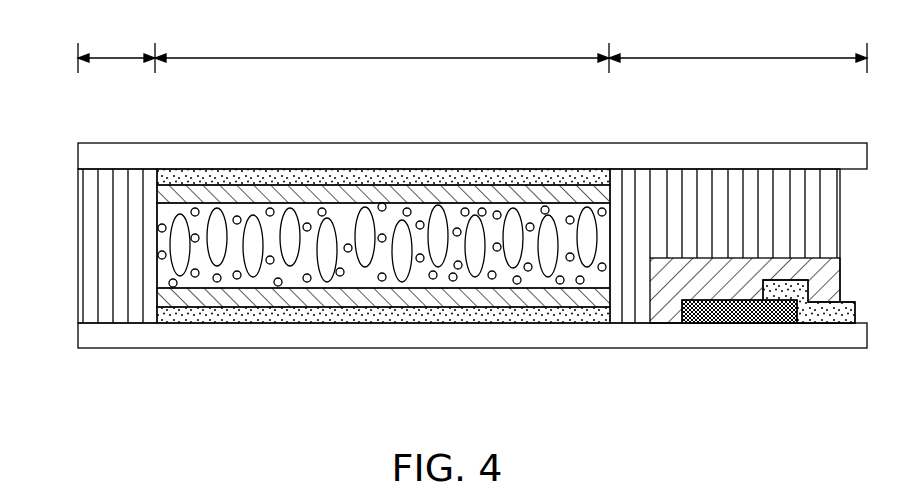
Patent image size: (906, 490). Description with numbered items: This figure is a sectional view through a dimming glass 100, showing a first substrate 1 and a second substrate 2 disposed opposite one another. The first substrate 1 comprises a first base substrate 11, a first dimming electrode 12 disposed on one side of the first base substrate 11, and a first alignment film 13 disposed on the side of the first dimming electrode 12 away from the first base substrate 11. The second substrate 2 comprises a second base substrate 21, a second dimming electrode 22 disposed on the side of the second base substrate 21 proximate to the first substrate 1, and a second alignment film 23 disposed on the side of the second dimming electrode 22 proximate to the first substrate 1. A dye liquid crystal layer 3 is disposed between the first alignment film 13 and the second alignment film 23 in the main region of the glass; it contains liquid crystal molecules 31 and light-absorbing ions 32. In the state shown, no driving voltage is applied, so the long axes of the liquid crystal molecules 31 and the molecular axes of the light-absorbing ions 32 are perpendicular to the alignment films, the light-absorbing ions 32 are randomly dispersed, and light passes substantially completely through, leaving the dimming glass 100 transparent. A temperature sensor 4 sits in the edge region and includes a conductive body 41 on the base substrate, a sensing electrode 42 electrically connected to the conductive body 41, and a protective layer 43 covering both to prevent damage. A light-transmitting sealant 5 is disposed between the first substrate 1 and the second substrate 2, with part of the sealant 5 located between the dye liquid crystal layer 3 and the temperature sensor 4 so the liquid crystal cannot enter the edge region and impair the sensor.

The dimming glass 100 is at (22, 27).
The first substrate 1 is at (168, 390).
The first base substrate 11 is at (178, 338).
The first dimming electrode 12 is at (233, 318).
The first alignment film 13 is at (290, 308).
The second substrate 2 is at (317, 110).
The second base substrate 21 is at (328, 157).
The second dimming electrode 22 is at (381, 178).
The second alignment film 23 is at (436, 200).
The dye liquid crystal layer 3 is at (383, 298).
The liquid crystal molecules 31 is at (412, 282).
The light-absorbing ions 32 is at (565, 283).
The temperature sensor 4 is at (660, 393).
The conductive body 41 is at (733, 323).
The sensing electrode 42 is at (820, 312).
The protective layer 43 is at (670, 310).
The sealant 5 is at (90, 250).